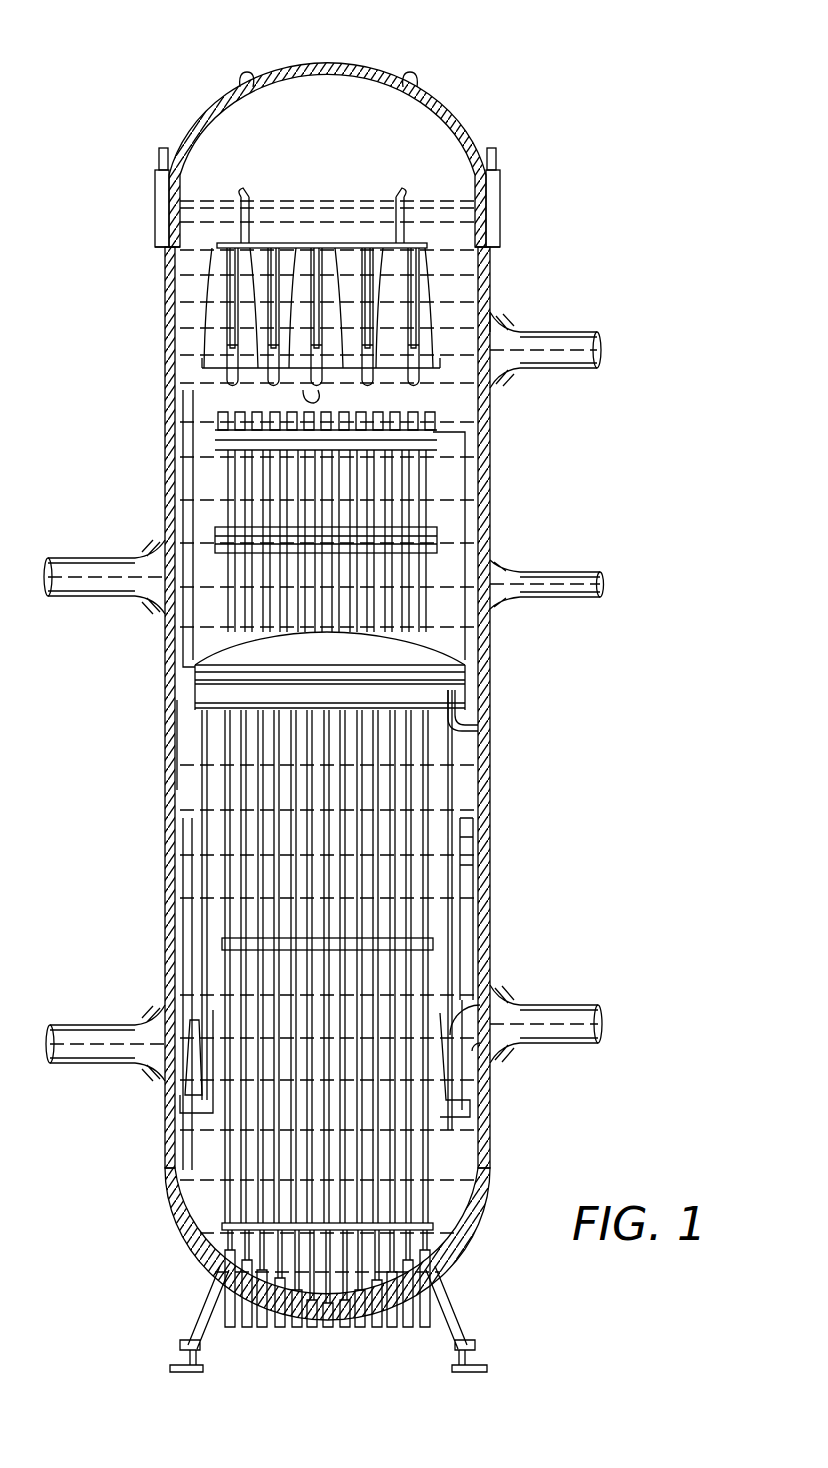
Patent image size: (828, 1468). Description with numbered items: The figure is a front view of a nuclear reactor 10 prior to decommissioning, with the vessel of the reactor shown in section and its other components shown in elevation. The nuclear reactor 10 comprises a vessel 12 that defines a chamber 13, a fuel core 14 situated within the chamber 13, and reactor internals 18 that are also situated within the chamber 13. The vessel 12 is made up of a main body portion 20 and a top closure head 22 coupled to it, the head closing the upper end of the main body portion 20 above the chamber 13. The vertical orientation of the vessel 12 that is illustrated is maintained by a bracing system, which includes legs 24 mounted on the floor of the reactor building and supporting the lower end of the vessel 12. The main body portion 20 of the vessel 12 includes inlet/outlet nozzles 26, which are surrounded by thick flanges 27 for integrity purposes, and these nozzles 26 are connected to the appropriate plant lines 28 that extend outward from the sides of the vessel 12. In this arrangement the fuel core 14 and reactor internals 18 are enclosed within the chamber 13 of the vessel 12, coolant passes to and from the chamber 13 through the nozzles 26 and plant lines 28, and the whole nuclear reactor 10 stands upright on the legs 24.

The nuclear reactor 10 is at (147, 120).
The vessel 12 is at (444, 110).
The chamber 13 is at (330, 200).
The fuel core 14 is at (360, 806).
The reactor internals 18 is at (245, 350).
The main body portion 20 is at (170, 735).
The top closure head 22 is at (292, 77).
The legs 24 is at (200, 1310).
The inlet/outlet nozzles 26 is at (505, 325).
The thick flanges 27 is at (505, 385).
The plant lines 28 is at (597, 336).